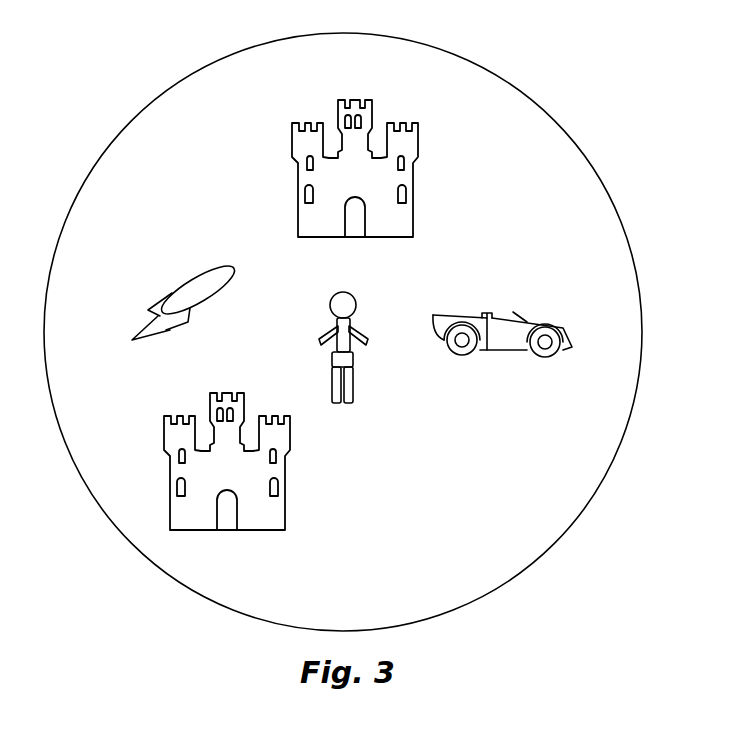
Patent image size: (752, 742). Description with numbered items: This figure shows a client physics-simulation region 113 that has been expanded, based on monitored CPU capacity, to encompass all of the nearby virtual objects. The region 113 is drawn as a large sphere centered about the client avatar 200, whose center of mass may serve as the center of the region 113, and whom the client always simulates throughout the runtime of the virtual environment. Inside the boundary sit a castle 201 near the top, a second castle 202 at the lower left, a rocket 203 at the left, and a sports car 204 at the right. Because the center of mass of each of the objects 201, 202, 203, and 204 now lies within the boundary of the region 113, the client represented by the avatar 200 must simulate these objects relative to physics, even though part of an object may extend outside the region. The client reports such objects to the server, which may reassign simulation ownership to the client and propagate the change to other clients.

The client physics-simulation region 113 is at (597, 168).
The client avatar 200 is at (330, 360).
The castle 201 is at (297, 167).
The castle 202 is at (287, 480).
The rocket 203 is at (193, 282).
The sports car 204 is at (497, 350).